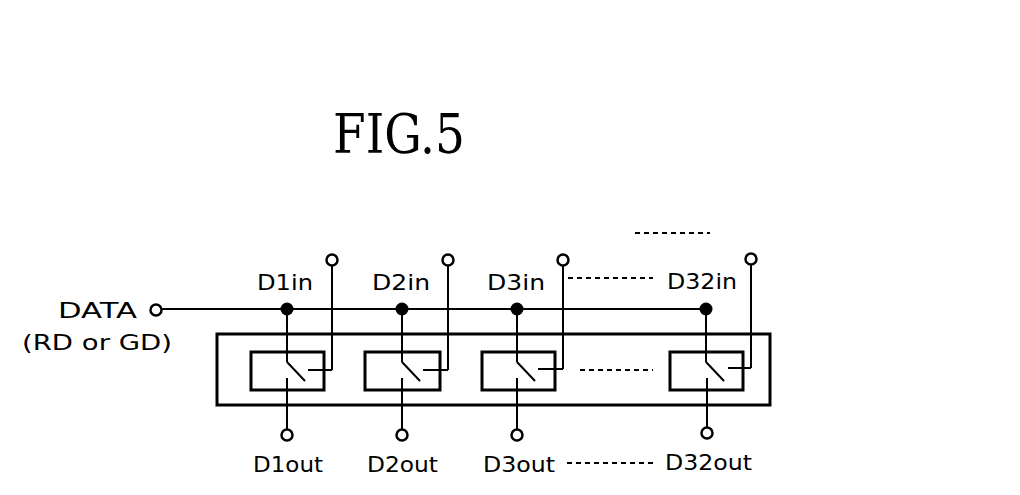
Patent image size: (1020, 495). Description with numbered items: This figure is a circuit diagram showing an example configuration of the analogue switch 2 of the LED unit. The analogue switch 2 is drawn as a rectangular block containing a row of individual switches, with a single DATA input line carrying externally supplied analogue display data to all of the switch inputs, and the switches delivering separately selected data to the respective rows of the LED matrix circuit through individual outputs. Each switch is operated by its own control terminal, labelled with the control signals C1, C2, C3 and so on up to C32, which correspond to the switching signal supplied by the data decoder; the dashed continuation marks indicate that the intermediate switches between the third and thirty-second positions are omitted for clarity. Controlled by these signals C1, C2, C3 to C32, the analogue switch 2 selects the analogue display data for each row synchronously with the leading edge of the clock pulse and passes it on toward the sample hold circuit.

The analogue switch 2 is at (772, 366).
The scan side column C1 is at (297, 296).
The scan side column C2 is at (436, 296).
The scan side column C3 is at (572, 296).
The scan side column C32 is at (786, 295).